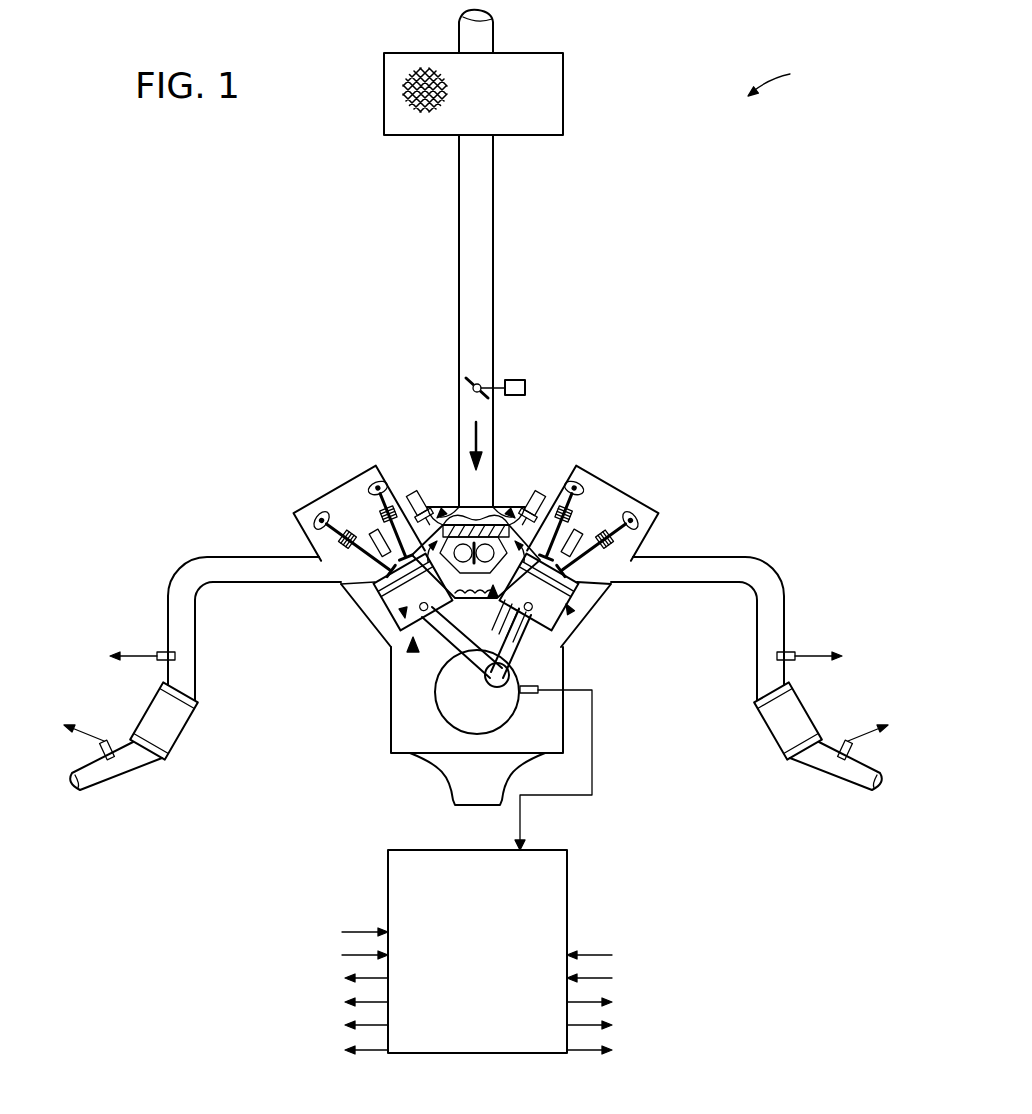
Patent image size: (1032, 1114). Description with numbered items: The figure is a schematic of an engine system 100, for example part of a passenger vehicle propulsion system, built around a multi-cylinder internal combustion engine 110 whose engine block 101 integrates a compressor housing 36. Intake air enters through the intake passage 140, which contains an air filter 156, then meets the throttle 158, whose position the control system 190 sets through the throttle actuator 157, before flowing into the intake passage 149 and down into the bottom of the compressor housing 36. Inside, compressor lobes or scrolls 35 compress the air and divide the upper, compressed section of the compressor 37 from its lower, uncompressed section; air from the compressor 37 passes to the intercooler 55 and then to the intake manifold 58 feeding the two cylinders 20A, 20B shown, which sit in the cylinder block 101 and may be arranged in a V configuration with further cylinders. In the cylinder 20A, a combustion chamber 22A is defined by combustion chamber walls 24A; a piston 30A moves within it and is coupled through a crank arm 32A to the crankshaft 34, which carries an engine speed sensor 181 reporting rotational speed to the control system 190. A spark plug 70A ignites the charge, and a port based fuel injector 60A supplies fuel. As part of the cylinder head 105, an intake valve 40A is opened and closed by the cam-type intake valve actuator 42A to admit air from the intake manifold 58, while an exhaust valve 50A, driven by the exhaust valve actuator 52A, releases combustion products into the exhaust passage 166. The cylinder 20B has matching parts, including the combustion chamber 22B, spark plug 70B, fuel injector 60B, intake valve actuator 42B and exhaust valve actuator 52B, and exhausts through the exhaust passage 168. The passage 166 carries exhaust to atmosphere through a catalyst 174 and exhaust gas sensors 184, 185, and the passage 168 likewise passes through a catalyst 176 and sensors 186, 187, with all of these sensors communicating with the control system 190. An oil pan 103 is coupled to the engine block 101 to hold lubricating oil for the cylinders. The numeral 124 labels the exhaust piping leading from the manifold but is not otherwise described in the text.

The engine system 100 is at (786, 78).
The intake passage 140 is at (482, 38).
The air filter 156 is at (540, 98).
The intake passage 149 is at (465, 410).
The throttle 158 is at (462, 384).
The throttle actuator 157 is at (536, 388).
The intercooler 55 is at (423, 505).
The intake manifold 58 is at (436, 512).
The compressor lobes or scrolls 35 is at (512, 507).
The compressor 37 is at (563, 672).
The oil pan 103 is at (432, 770).
The crankshaft 34 is at (473, 703).
The crank arm 32A is at (440, 655).
The piston 30A is at (410, 660).
The compressor housing 36 is at (545, 642).
The engine block 101 is at (598, 594).
The engine speed sensor 181 is at (527, 697).
The cylinder head 105 is at (296, 522).
The internal combustion engine 110 is at (670, 482).
The cylinder 20A is at (400, 633).
The cylinder 20B is at (578, 612).
The combustion chamber walls 24A is at (400, 625).
The combustion chamber 22A is at (383, 618).
The combustion chamber 22B is at (575, 580).
The intake valve actuator 42A is at (365, 502).
The intake valve actuator 42B is at (602, 472).
The intake valve 40A is at (397, 497).
The exhaust valve actuator 52A is at (322, 518).
The exhaust valve actuator 52B is at (660, 510).
The exhaust valve 50A is at (370, 592).
The spark plug 70A is at (366, 532).
The spark plug 70B is at (586, 532).
The fuel injector 60A is at (412, 492).
The fuel injector 60B is at (542, 492).
The exhaust passage 166 is at (292, 558).
The exhaust passage 168 is at (665, 556).
The exhaust passage 124 is at (170, 573).
The exhaust gas sensor 184 is at (160, 650).
The exhaust gas sensor 186 is at (790, 650).
The catalyst 174 is at (160, 716).
The catalyst 176 is at (795, 710).
The exhaust gas sensor 185 is at (103, 748).
The exhaust gas sensor 187 is at (849, 745).
The control system 190 is at (462, 962).